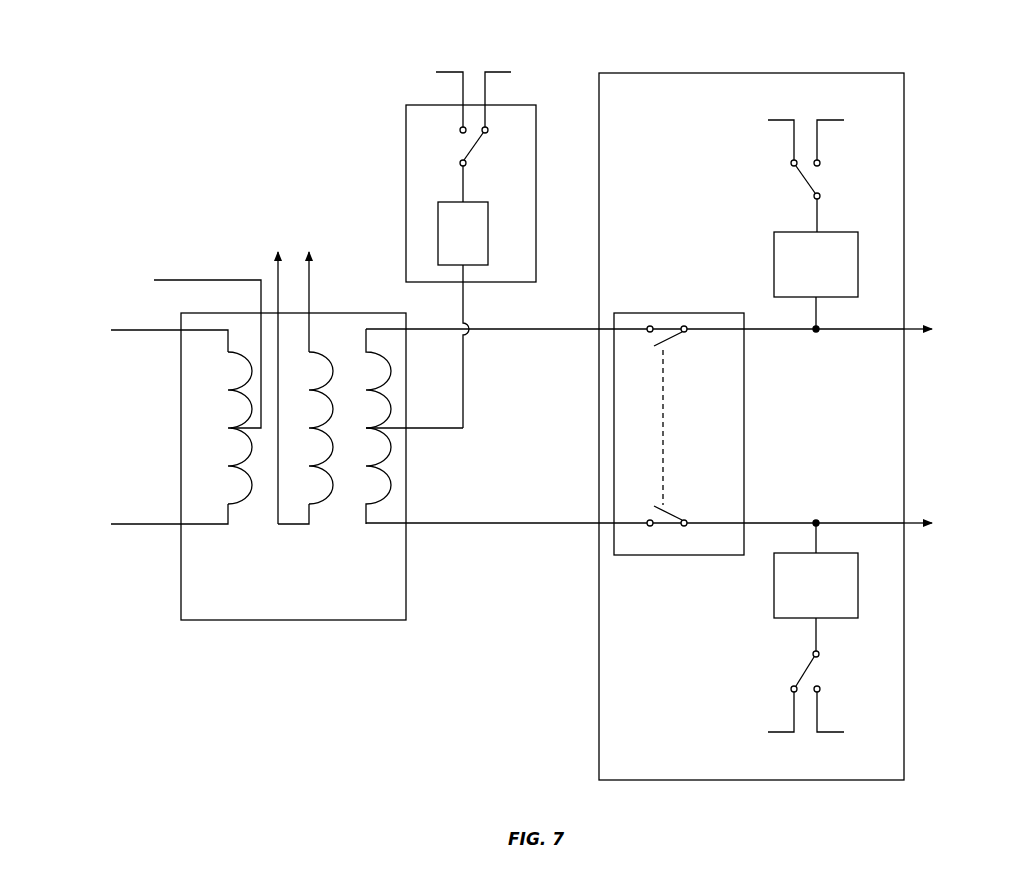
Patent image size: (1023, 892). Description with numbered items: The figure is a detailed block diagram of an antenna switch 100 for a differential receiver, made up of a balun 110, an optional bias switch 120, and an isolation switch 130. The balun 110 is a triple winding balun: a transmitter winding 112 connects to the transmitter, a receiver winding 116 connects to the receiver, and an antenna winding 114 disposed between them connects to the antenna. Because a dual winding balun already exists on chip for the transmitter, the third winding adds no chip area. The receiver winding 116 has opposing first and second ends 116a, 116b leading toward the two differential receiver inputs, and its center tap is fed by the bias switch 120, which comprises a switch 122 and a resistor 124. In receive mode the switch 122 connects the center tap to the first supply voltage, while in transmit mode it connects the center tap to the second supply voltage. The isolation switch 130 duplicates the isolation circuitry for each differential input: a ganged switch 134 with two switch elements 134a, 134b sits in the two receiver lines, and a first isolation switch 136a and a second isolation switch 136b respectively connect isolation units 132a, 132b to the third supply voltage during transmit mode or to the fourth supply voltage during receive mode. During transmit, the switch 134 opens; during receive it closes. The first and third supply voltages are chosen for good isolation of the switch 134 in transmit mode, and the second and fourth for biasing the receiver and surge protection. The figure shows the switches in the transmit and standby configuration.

The antenna switch 100 is at (212, 116).
The balun 110 is at (357, 620).
The transmitter winding 112 is at (234, 548).
The antenna winding 114 is at (323, 532).
The receiver winding 116 is at (350, 333).
The first end of the receiver winding 116a is at (490, 332).
The second end of the receiver winding 116b is at (437, 522).
The bias switch 120 is at (535, 105).
The switch SW1 122 is at (468, 150).
The resistor R1 124 is at (463, 233).
The isolation switch 130 is at (855, 780).
The isolation unit 132a is at (816, 264).
The isolation unit 132b is at (816, 585).
The switch SW2 134 is at (743, 410).
The switch element of SW2 134a is at (668, 338).
The switch element of SW2 134b is at (668, 514).
The switch SW3a 136a is at (803, 183).
The switch SW3b 136b is at (803, 672).